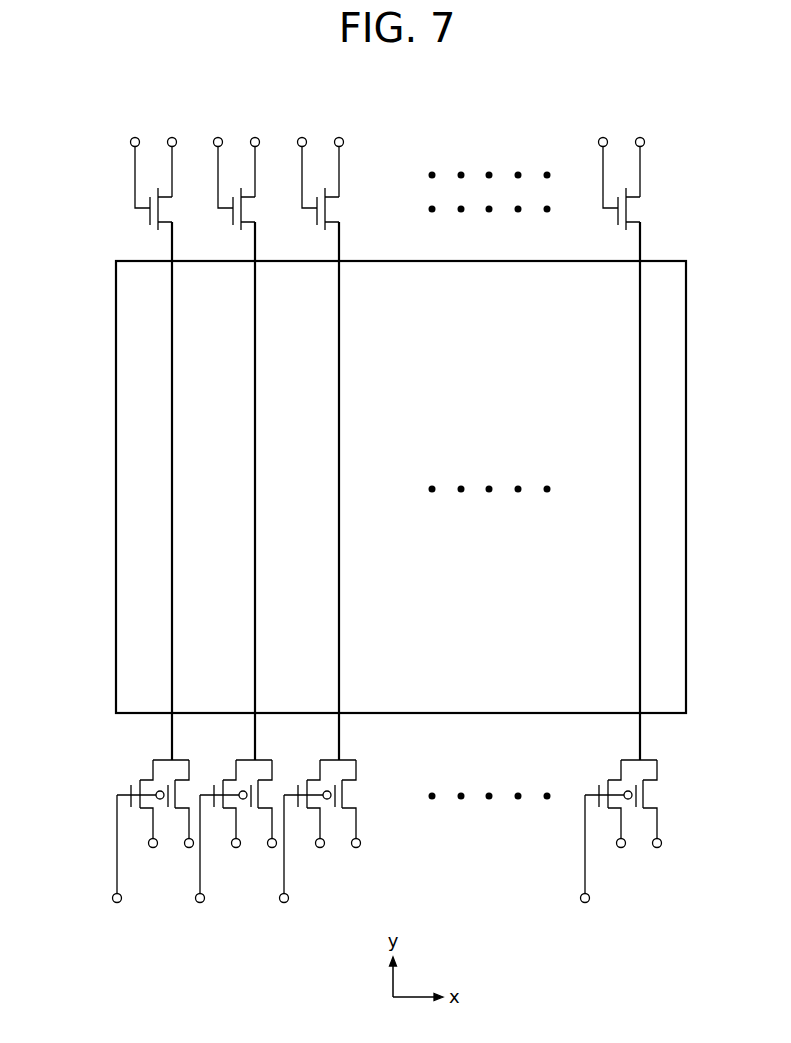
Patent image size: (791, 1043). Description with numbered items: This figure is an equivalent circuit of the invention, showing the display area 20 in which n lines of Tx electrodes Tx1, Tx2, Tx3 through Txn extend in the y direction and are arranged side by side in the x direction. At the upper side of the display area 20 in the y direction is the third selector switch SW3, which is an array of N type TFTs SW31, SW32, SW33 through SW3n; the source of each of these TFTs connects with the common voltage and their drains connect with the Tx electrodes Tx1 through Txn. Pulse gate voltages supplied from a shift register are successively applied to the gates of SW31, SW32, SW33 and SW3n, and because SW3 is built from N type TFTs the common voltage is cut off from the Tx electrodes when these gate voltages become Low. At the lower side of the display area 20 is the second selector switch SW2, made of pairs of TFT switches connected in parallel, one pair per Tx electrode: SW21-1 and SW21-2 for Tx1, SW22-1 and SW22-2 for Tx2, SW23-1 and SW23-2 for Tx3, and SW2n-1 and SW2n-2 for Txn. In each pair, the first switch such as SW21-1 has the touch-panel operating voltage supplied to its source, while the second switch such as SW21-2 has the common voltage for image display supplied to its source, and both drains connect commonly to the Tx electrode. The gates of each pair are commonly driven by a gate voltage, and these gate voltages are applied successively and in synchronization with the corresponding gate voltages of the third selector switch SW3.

The display area 20 is at (673, 443).
The third selector switch SW3 is at (355, 185).
The N type TFT of third selector switch SW31 is at (156, 186).
The N type TFT of third selector switch SW32 is at (239, 186).
The N type TFT of third selector switch SW33 is at (323, 185).
The N type TFT of third selector switch SW3n is at (624, 185).
The second selector switch SW2 is at (367, 833).
The TFT switch SW21-1 is at (135, 817).
The TFT switch SW21-2 is at (173, 772).
The TFT switch SW22-1 is at (218, 817).
The TFT switch SW22-2 is at (256, 772).
The TFT switch SW23-1 is at (302, 817).
The TFT switch SW23-2 is at (340, 772).
The TFT switch SW2n-1 is at (603, 817).
The TFT switch SW2n-2 is at (641, 772).
The Tx electrode Tx1 is at (172, 373).
The Tx electrode Tx2 is at (255, 417).
The Tx electrode Tx3 is at (338, 462).
The Tx electrode Txn is at (640, 393).